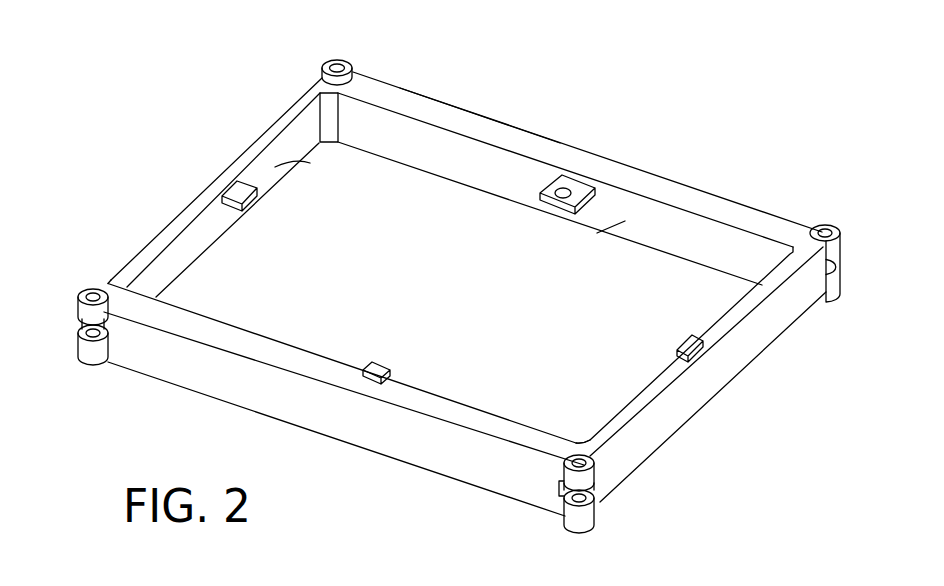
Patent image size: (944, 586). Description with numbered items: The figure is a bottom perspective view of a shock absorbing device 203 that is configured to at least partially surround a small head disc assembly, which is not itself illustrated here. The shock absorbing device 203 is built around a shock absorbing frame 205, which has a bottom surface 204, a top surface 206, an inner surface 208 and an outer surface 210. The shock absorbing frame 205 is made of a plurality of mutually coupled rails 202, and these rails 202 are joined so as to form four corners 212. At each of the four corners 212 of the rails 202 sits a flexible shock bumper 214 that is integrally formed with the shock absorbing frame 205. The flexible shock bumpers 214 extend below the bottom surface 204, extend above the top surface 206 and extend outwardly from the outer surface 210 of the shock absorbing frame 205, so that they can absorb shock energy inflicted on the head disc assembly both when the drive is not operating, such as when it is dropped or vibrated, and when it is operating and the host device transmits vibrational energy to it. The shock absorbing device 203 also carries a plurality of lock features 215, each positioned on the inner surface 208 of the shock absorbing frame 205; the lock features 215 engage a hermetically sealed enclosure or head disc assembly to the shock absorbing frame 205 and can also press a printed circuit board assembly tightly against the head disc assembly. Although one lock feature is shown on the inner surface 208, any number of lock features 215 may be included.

The rails 202 is at (455, 107).
The shock absorbing device 203 is at (714, 130).
The bottom surface 204 is at (260, 140).
The shock absorbing frame 205 is at (552, 137).
The top surface 206 is at (395, 165).
The inner surface 208 is at (310, 163).
The outer surface 210 is at (662, 425).
The corners 212 is at (314, 79).
The flexible shock bumpers 214 is at (343, 62).
The lock features 215 is at (245, 199).